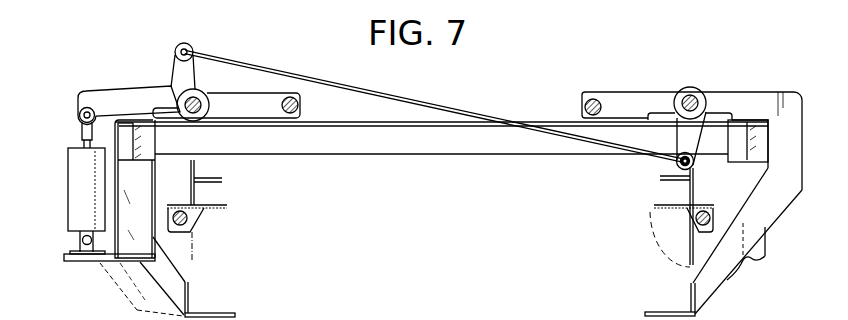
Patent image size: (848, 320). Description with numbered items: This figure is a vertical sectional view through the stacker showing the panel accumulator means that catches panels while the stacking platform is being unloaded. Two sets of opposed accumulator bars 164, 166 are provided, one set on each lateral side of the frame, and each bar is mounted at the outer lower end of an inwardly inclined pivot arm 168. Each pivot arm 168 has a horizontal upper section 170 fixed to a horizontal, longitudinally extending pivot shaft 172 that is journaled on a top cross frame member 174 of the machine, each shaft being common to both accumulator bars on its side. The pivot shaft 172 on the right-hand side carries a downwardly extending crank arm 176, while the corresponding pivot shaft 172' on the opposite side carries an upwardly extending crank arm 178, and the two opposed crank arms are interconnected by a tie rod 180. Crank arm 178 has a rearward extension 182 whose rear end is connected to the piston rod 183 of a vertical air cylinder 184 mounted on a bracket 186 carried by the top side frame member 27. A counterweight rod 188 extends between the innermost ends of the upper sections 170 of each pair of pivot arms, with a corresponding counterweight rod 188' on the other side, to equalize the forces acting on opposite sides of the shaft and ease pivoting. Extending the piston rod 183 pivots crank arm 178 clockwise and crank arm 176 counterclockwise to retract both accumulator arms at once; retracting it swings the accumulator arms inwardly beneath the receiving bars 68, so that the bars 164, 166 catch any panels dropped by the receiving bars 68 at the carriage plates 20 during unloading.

The carriage plate 20 is at (222, 193).
The top side frame member 27 is at (137, 150).
The receiving bars 68 is at (210, 208).
The accumulator bar 164 is at (226, 313).
The accumulator bar 166 is at (658, 312).
The pivot arm 168 is at (723, 282).
The horizontal upper section 170 is at (748, 91).
The pivot shaft 172 is at (678, 91).
The pivot shaft 172' is at (205, 93).
The top cross frame member 174 is at (408, 153).
The crank arm 176 is at (687, 135).
The crank arm 178 is at (172, 62).
The tie rod 180 is at (352, 85).
The rearward extension 182 is at (115, 99).
The piston rod 183 is at (78, 132).
The vertical air cylinder 184 is at (69, 183).
The bracket 186 is at (100, 262).
The counterweight rod 188 is at (598, 100).
The pin 188' is at (248, 105).